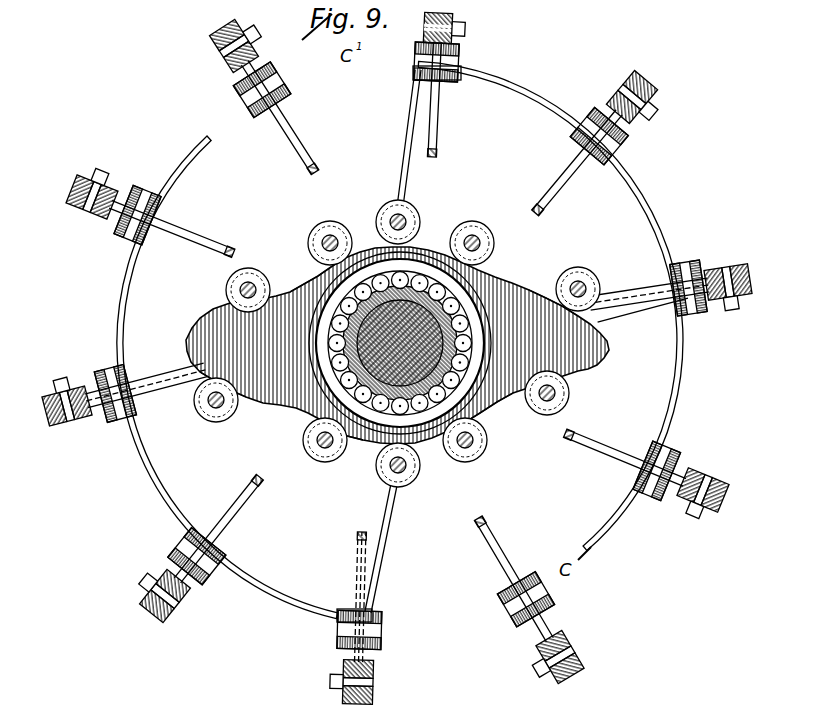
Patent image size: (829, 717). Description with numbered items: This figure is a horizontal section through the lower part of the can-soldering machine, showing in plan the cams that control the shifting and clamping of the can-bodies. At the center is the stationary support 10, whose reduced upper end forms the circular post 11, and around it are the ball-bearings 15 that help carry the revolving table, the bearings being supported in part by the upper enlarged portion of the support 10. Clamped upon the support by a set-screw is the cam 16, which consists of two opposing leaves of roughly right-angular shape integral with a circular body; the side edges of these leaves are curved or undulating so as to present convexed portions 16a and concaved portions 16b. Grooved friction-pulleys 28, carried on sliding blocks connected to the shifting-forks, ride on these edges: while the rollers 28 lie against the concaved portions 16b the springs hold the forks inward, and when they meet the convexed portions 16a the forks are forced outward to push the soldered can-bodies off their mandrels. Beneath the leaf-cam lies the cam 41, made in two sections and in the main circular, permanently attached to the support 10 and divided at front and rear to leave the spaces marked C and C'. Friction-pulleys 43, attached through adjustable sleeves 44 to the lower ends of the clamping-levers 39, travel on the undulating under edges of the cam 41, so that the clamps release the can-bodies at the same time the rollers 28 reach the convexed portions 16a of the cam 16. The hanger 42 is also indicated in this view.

The support 10 is at (404, 339).
The post 11 is at (400, 343).
The ball-bearings 15 is at (464, 321).
The cam 16 is at (397, 370).
The convexed portions 16a is at (268, 421).
The concaved portions 16b is at (499, 406).
The pulley 28 is at (421, 219).
The clamping-levers 39 is at (236, 59).
The cam 41 is at (159, 479).
The hanger 42 is at (407, 158).
The friction-pulley 43 is at (258, 102).
The sleeve 44 is at (252, 45).